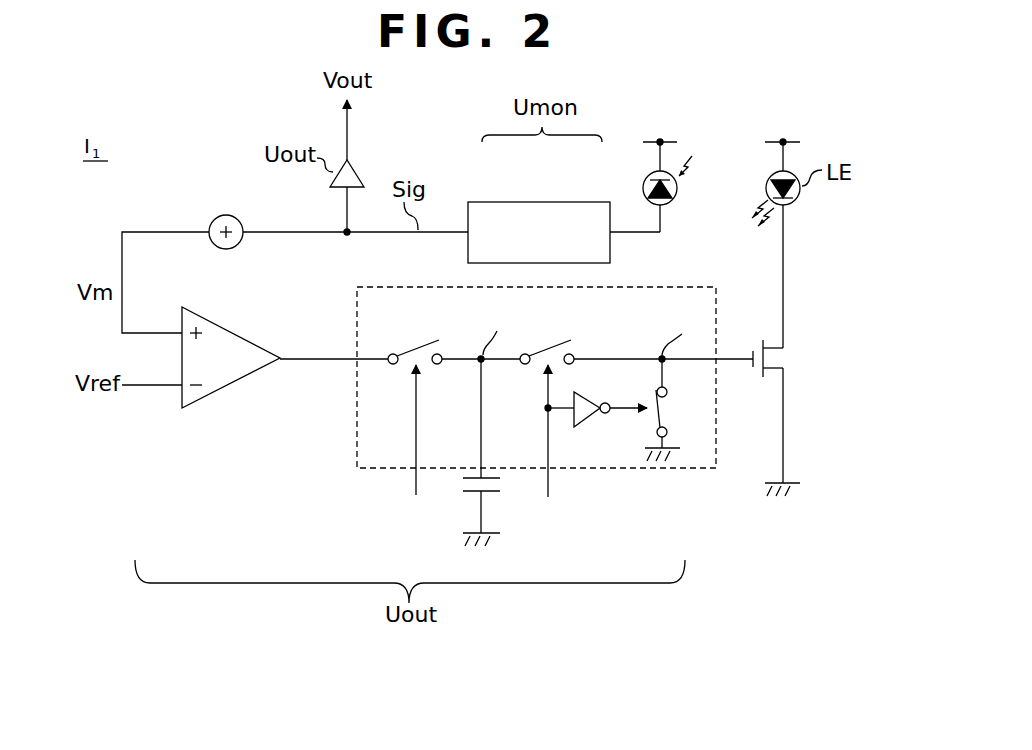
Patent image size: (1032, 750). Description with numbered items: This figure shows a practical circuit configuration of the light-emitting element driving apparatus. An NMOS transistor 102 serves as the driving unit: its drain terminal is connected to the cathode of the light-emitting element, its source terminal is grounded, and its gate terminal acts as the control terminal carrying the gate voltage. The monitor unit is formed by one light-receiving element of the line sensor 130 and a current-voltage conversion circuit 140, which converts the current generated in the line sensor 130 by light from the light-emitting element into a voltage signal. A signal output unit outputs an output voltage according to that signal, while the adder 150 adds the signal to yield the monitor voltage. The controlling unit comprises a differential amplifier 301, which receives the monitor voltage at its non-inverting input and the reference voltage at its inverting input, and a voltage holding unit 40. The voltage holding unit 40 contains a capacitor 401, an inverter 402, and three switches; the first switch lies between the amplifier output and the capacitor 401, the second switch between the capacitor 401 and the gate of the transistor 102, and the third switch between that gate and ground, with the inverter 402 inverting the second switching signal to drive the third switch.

The adder 150 is at (226, 214).
The current-voltage conversion circuit 140 is at (508, 202).
The line sensor 130 is at (645, 180).
The NMOS transistor 102 is at (797, 358).
The differential amplifier 301 is at (232, 396).
The voltage holding unit 40 is at (521, 416).
The capacitor 401 is at (498, 503).
The inverter 402 is at (588, 420).